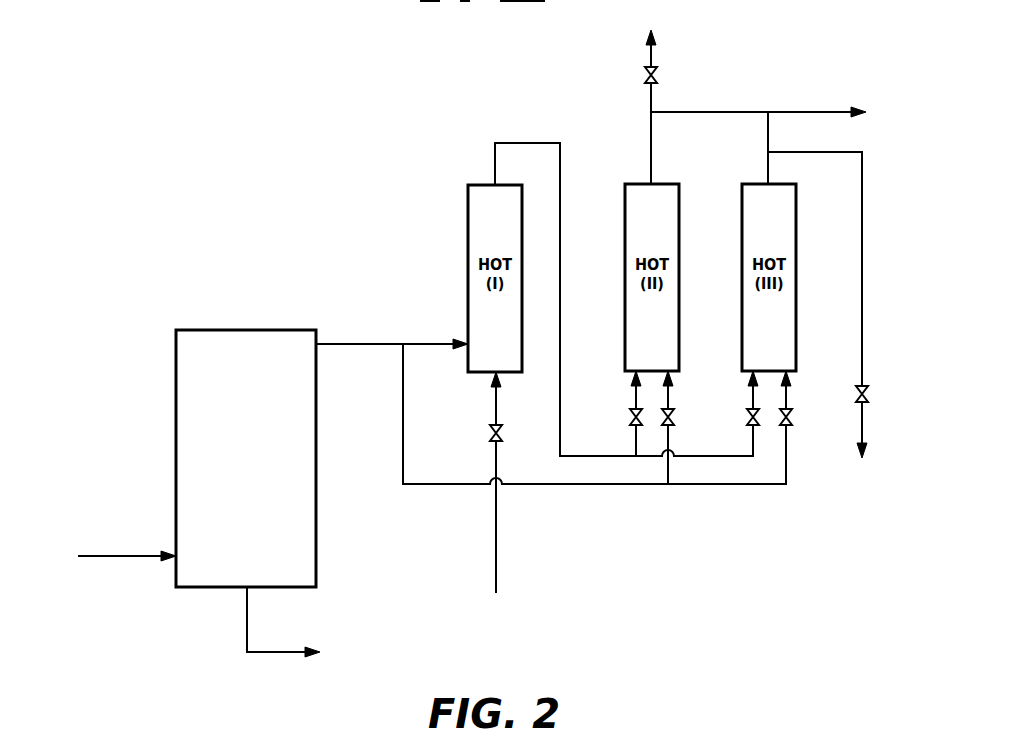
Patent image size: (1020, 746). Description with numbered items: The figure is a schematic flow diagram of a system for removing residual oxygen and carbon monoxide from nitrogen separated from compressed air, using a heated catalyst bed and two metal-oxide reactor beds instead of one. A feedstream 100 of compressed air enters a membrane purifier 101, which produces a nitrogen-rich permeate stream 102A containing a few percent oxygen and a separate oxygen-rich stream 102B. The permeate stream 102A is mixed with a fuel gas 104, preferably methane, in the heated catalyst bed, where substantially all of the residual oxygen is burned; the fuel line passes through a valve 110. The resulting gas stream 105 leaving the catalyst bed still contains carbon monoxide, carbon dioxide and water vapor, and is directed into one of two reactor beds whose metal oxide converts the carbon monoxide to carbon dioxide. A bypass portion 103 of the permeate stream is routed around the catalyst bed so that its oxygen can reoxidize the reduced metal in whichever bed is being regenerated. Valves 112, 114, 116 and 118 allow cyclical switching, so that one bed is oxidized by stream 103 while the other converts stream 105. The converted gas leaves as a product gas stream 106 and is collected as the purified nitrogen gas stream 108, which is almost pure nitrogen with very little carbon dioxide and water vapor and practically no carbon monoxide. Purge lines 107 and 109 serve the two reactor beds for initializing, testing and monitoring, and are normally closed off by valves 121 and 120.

The feedstream of compressed air 100 is at (104, 558).
The membrane purifier 101 is at (268, 474).
The permeate stream 102A is at (355, 348).
The stream 102B is at (272, 653).
The portion of the permeate stream 103 is at (440, 487).
The fuel gas 104 is at (498, 531).
The resulting gas stream 105 is at (560, 185).
The product gas stream 106 is at (653, 148).
The purge gas stream line 107 is at (650, 60).
The purified nitrogen gas stream 108 is at (733, 112).
The purge gas stream line 109 is at (863, 183).
The valve 110 is at (490, 437).
The valve 112 is at (632, 414).
The valve 114 is at (672, 420).
The valve 116 is at (749, 414).
The valve 118 is at (790, 420).
The valve 120 is at (865, 396).
The valve 121 is at (654, 80).